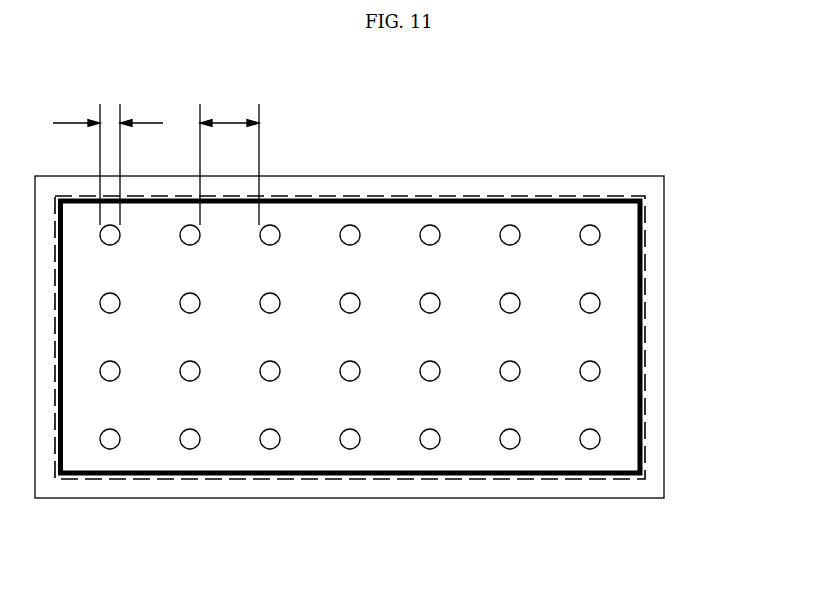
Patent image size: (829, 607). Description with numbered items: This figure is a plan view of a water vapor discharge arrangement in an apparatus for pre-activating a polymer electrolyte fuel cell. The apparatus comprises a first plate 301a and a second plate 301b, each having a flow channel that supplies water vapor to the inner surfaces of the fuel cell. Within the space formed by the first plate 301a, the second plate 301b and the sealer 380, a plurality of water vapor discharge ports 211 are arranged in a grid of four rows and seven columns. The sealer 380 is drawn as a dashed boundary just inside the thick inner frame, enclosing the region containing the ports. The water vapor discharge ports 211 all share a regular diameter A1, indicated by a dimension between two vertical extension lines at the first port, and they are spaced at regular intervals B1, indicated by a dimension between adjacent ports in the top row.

The water vapor discharge ports 211 is at (591, 224).
The sealer 380 is at (647, 297).
The first plate 301a is at (349, 383).
The second plate 301b is at (350, 498).
The diameter A1 is at (108, 148).
The interval B1 is at (229, 148).